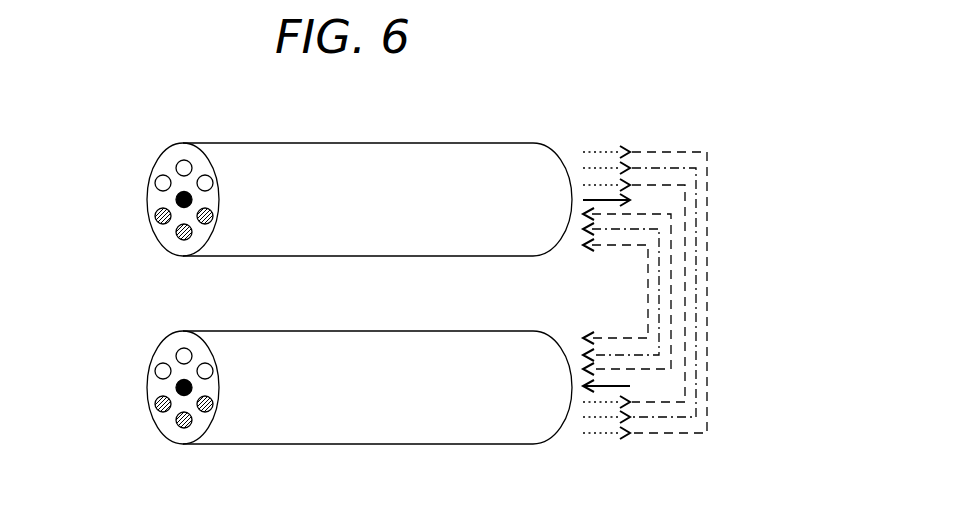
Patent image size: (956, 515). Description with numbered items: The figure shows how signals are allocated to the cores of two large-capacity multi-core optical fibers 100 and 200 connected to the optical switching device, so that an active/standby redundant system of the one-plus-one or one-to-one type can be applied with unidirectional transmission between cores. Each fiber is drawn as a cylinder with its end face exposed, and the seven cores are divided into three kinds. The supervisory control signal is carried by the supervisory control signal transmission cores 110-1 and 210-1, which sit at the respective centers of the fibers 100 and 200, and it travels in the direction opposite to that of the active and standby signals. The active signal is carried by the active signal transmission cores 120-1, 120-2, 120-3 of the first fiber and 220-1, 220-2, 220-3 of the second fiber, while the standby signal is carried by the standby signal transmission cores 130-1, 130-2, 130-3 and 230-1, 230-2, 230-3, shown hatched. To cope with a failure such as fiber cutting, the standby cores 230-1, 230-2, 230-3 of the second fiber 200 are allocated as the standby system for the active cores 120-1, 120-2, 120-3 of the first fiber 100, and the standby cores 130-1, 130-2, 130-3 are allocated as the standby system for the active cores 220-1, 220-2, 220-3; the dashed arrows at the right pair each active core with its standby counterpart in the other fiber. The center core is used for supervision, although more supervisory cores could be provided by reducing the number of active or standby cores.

The large-capacity optical fiber 100 is at (436, 162).
The supervisory control signal transmission core 110-1 is at (181, 208).
The active signal transmission core 120-1 is at (212, 180).
The active signal transmission core 120-2 is at (177, 163).
The active signal transmission core 120-3 is at (157, 187).
The standby signal transmission core 130-1 is at (213, 216).
The standby signal transmission core 130-2 is at (190, 240).
The standby signal transmission core 130-3 is at (157, 222).
The large-capacity optical fiber 200 is at (436, 350).
The supervisory control signal transmission core 210-1 is at (181, 396).
The active signal transmission core 220-1 is at (212, 368).
The active signal transmission core 220-2 is at (177, 351).
The active signal transmission core 220-3 is at (157, 375).
The standby signal transmission core 230-1 is at (213, 404).
The standby signal transmission core 230-2 is at (190, 428).
The standby signal transmission core 230-3 is at (157, 410).